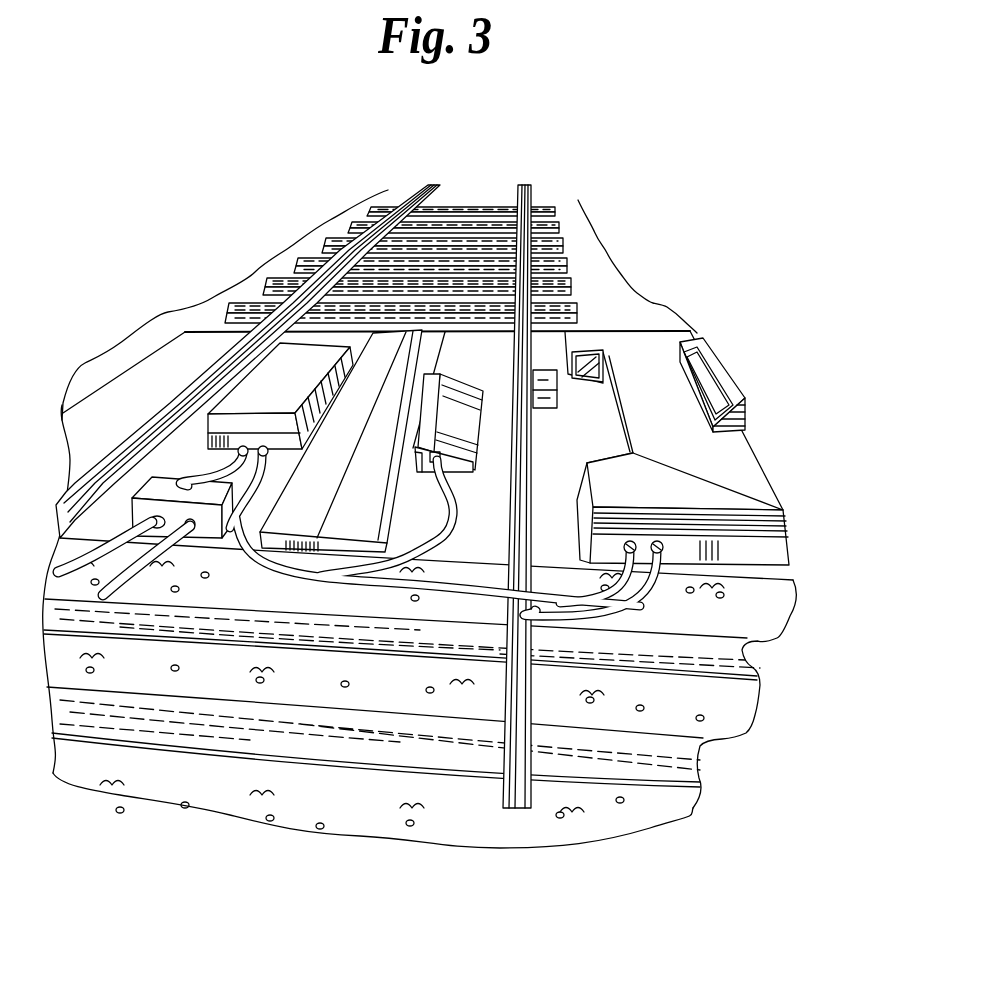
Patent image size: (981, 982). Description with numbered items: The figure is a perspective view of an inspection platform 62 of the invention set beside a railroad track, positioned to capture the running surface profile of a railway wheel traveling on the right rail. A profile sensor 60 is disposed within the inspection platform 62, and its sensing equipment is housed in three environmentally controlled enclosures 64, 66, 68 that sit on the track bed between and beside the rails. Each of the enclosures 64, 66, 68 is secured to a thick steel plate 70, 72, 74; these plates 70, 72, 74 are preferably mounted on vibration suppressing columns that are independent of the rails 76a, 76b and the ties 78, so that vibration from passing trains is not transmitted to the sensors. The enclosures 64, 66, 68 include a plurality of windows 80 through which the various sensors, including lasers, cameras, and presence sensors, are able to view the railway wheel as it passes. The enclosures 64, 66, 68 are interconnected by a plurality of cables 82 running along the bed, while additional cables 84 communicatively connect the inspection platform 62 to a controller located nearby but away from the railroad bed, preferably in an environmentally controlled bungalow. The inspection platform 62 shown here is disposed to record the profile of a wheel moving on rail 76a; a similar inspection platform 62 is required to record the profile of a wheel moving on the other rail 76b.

The profile sensor 60 is at (286, 232).
The inspection platform 62 is at (197, 315).
The environmentally controlled enclosure 64 is at (290, 370).
The environmentally controlled enclosure 66 is at (445, 387).
The environmentally controlled enclosure 68 is at (650, 357).
The thick steel plate 70 is at (165, 357).
The thick steel plate 72 is at (510, 350).
The thick steel plate 74 is at (693, 618).
The rail 76a is at (528, 192).
The rail 76b is at (435, 185).
The ties 78 is at (677, 657).
The windows 80 is at (320, 408).
The cables 82 is at (197, 475).
The cables 84 is at (112, 520).